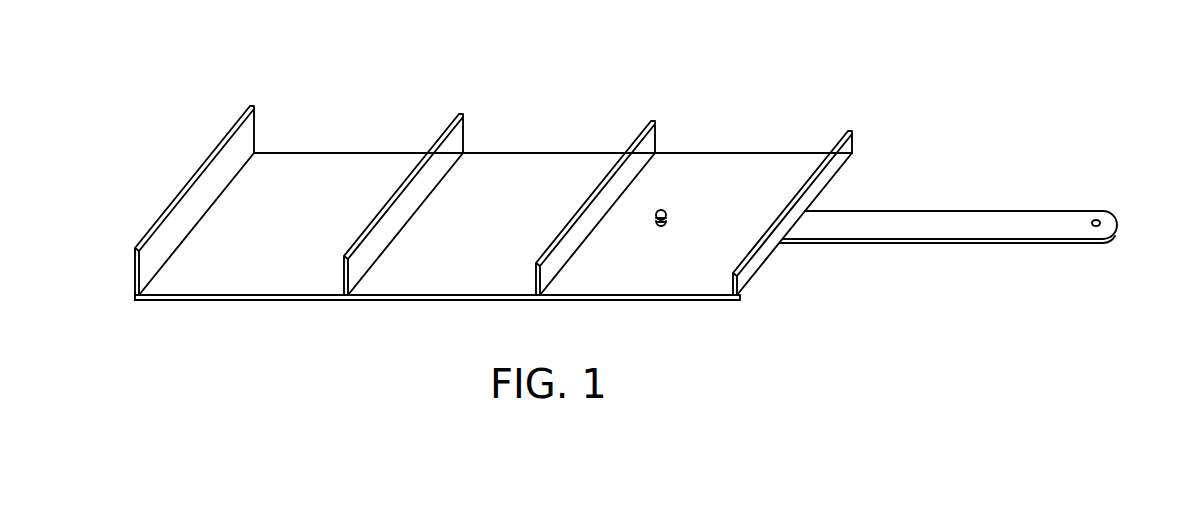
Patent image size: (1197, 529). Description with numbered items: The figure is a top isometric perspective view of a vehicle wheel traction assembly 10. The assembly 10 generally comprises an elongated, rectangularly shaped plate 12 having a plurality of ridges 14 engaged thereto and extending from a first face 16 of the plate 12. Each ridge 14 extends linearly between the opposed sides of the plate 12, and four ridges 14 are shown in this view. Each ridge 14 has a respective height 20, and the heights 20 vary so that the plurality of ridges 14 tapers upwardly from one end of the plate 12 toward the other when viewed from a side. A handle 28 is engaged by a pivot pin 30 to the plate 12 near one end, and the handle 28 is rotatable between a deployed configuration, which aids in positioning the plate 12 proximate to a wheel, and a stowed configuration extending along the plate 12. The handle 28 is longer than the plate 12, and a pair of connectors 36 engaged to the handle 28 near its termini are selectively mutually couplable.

The vehicle wheel traction assembly 10 is at (912, 133).
The plate 12 is at (715, 153).
The ridges 14 is at (153, 233).
The first face 16 is at (525, 217).
The height 20 is at (135, 274).
The handle 28 is at (1000, 210).
The pivot pin 30 is at (667, 224).
The connectors 36 is at (1102, 225).